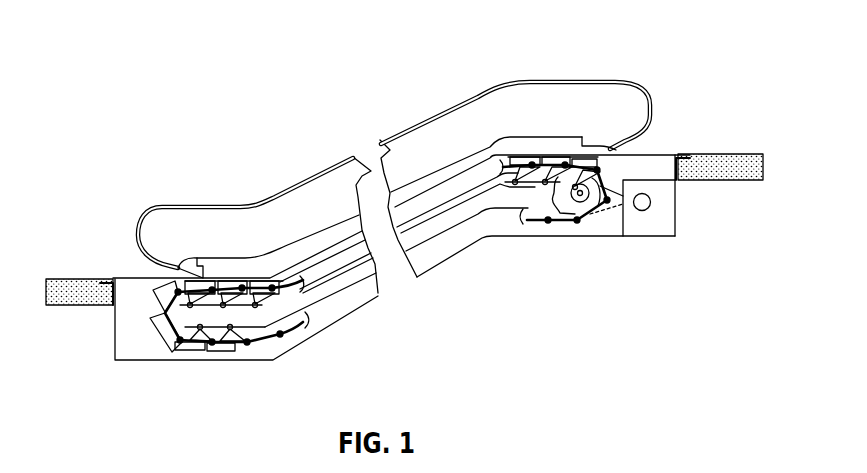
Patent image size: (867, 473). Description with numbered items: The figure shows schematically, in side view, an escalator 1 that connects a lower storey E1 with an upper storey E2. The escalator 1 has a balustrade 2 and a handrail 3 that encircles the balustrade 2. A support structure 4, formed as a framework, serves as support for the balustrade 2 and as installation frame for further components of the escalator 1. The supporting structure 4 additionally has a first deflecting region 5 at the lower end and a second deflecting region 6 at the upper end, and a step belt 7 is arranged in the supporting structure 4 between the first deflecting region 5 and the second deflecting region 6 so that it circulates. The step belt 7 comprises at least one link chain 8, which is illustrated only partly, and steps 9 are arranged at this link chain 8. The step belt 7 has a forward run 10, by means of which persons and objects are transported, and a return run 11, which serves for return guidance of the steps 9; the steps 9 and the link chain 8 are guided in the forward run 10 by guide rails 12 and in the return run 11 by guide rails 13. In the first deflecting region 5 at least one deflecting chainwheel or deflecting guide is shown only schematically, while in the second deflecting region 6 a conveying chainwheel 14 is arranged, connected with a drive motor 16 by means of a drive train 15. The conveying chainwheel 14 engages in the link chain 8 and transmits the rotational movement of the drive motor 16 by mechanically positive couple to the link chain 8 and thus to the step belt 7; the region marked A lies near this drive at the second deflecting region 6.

The escalator 1 is at (424, 78).
The balustrade 2 is at (531, 102).
The handrail 3 is at (614, 83).
The support structure 4 is at (613, 238).
The first deflecting region 5 is at (138, 349).
The second deflecting region 6 is at (558, 246).
The step belt 7 is at (562, 155).
The link chain 8 is at (300, 333).
The steps 9 is at (220, 283).
The forward run 10 is at (340, 272).
The return run 11 is at (326, 315).
The guide rails 12 is at (441, 220).
The guide rails 13 is at (478, 224).
The conveying chainwheel 14 is at (613, 178).
The drive train 15 is at (639, 213).
The drive motor 16 is at (661, 185).
The drive region A is at (589, 240).
The lower storey E1 is at (79, 279).
The upper storey E2 is at (719, 156).